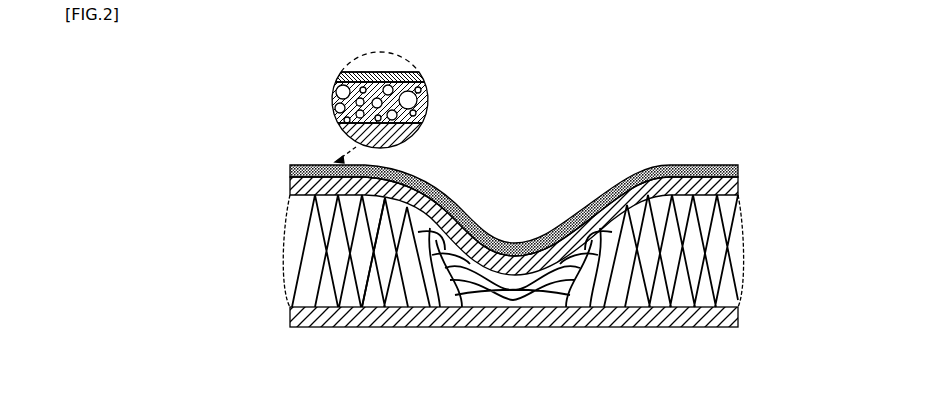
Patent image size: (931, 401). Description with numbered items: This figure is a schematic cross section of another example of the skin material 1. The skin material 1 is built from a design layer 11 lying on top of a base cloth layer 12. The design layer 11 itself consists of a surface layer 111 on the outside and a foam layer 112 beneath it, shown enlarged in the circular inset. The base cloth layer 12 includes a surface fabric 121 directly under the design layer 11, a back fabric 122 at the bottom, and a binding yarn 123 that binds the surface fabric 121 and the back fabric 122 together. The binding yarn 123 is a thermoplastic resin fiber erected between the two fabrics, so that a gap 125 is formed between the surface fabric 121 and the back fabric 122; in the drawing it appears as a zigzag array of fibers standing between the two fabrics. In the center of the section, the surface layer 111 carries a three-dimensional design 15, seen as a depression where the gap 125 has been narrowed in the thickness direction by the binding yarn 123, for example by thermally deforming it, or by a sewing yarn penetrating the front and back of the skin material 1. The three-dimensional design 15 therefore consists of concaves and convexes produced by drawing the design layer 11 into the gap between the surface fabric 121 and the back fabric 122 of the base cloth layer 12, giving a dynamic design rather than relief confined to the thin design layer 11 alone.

The skin material 1 is at (310, 139).
The design layer 11 is at (490, 72).
The surface layer 111 is at (421, 75).
The foam layer 112 is at (424, 108).
The surface fabric 121 is at (290, 184).
The base cloth layer 12 is at (508, 279).
The back fabric 122 is at (290, 319).
The binding yarn 123 is at (290, 235).
The gap 125 is at (377, 293).
The three-dimensional design 15 is at (519, 236).